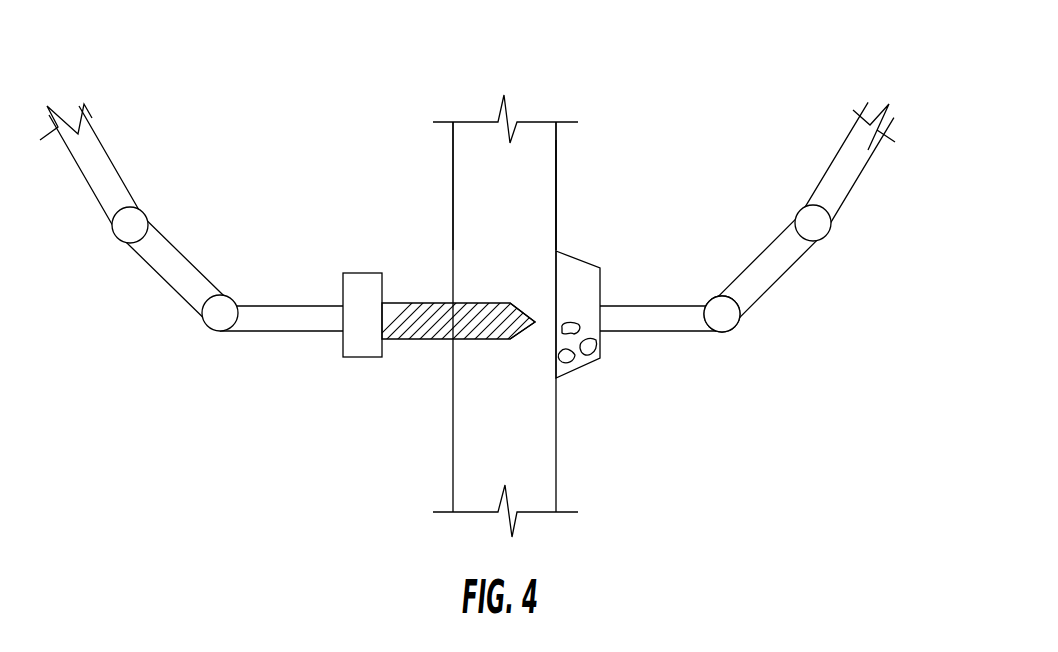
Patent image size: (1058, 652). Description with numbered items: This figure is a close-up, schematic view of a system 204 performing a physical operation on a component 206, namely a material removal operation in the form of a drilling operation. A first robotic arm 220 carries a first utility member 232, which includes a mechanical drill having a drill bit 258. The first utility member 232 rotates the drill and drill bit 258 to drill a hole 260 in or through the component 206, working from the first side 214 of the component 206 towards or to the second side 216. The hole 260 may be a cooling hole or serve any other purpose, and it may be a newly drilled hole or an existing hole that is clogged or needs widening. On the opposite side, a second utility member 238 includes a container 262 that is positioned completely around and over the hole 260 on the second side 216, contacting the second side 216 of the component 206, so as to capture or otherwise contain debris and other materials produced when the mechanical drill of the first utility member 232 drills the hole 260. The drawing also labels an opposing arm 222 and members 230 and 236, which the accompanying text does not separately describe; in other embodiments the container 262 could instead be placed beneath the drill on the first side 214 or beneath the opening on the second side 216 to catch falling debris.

The system 204 is at (708, 90).
The component 206 is at (528, 173).
The first side 214 is at (438, 415).
The second side 216 is at (560, 208).
The first robotic arm 220 is at (214, 160).
The right arm 222 is at (850, 239).
The left rod 230 is at (301, 365).
The first utility member 232 is at (361, 273).
The right rod 236 is at (639, 301).
The second utility member 238 is at (599, 250).
The drill bit 258 is at (432, 302).
The hole 260 is at (513, 332).
The container 262 is at (601, 352).